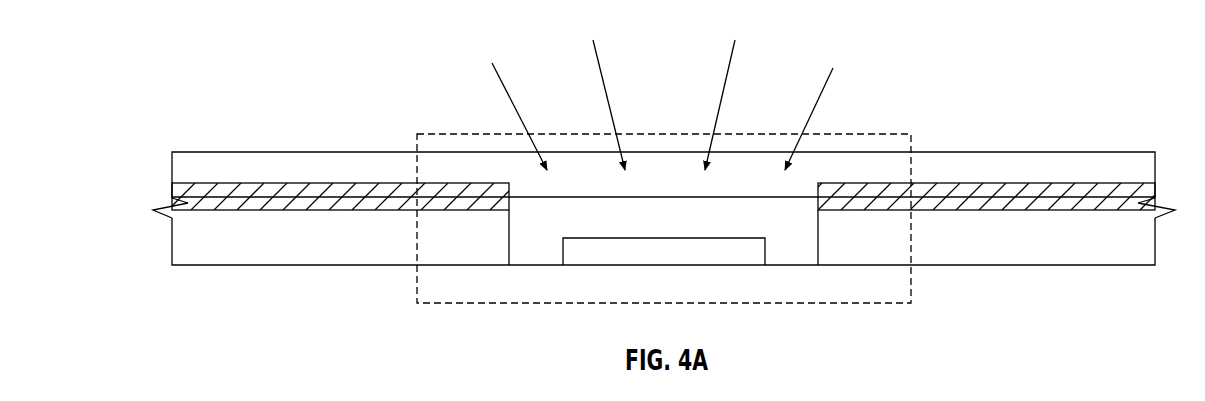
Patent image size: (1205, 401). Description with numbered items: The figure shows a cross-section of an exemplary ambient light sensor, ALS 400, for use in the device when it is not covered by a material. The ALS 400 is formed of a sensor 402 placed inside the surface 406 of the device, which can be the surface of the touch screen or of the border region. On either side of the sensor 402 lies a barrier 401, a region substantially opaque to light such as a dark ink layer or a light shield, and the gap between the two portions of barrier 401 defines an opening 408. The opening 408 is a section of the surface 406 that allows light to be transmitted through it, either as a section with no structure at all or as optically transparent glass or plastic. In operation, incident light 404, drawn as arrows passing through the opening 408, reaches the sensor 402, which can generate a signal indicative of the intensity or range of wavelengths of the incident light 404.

The ambient light sensor (ALS) 400 is at (893, 132).
The barrier 401 is at (310, 210).
The sensor 402 is at (698, 265).
The incident light 404 is at (733, 62).
The surface 406 is at (1055, 152).
The opening 408 is at (808, 105).